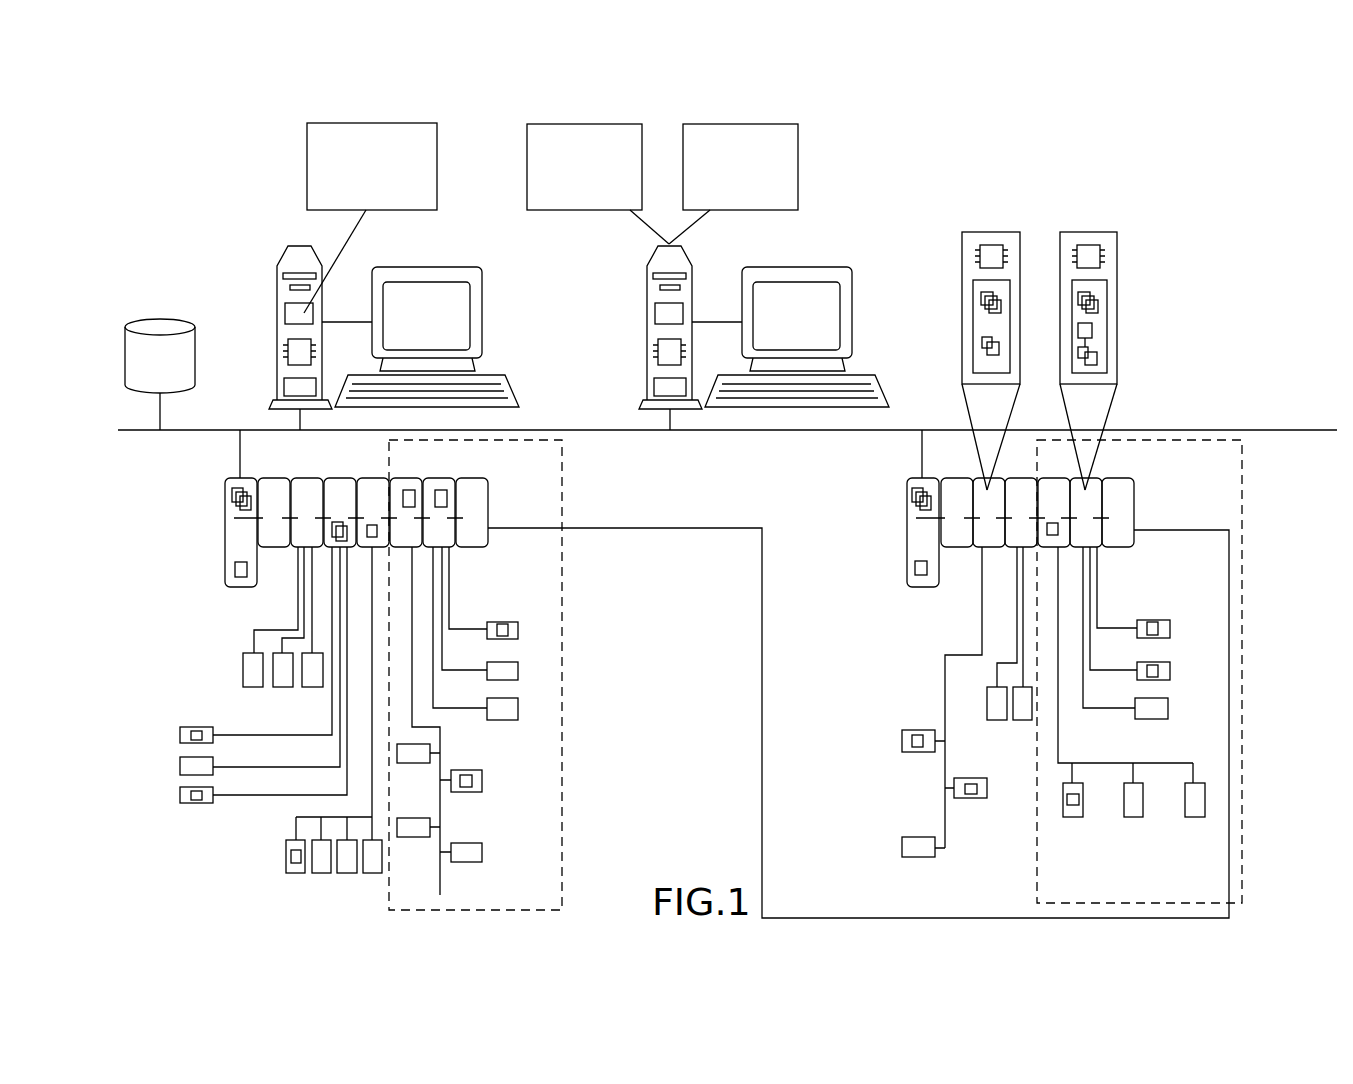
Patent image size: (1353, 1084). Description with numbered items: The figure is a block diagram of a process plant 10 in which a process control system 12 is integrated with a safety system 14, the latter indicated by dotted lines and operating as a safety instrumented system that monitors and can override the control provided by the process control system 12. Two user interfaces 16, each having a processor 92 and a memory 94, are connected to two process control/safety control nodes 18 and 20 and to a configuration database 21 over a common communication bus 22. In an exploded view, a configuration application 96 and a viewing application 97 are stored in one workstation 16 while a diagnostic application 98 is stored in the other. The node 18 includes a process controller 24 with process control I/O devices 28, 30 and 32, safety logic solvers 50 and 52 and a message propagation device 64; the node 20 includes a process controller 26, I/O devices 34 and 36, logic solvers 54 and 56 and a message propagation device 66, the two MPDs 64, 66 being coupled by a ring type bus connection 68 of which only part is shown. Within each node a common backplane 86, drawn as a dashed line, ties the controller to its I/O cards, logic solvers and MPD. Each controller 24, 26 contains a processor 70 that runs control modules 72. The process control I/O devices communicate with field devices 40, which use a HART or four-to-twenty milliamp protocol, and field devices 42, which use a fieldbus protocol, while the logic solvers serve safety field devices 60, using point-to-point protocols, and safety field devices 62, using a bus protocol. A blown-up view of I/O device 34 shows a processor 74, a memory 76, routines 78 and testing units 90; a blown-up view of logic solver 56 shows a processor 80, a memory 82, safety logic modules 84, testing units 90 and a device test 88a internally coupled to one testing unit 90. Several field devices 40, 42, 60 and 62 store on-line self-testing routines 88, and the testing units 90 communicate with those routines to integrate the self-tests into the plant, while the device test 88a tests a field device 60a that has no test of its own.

The process plant 10 is at (190, 220).
The process control system 12 is at (150, 672).
The safety system 14 is at (563, 815).
The user interface 16 is at (299, 245).
The process control/safety control node 18 is at (184, 492).
The process control/safety control node 20 is at (1258, 492).
The configuration database 21 is at (178, 320).
The bus 22 is at (578, 430).
The process controller 24 is at (240, 590).
The process controller 26 is at (921, 590).
The process control system I/O device 28 is at (308, 478).
The process control system I/O device 30 is at (340, 478).
The process control system I/O device 32 is at (372, 478).
The process control system I/O device 34 is at (1000, 232).
The process control system I/O device 36 is at (1020, 478).
The field device 40 is at (254, 687).
The field device 42 is at (295, 873).
The safety system logic solver 50 is at (405, 478).
The safety system logic solver 52 is at (437, 478).
The safety system logic solver 54 is at (1055, 478).
The safety system logic solver 56 is at (1097, 232).
The safety system field device 60 is at (520, 630).
The safety field device 60a is at (1170, 710).
The safety system field device 62 is at (410, 763).
The message propagation device 64 is at (470, 547).
The message propagation device 66 is at (1128, 478).
The ring type bus connection 68 is at (760, 705).
The processor 70 is at (235, 572).
The control module 72 is at (232, 497).
The processor 74 is at (980, 252).
The memory 76 is at (973, 323).
The routine 78 is at (981, 298).
The processor 80 is at (1100, 253).
The memory 82 is at (1107, 325).
The safety logic module 84 is at (1092, 310).
The common backplane 86 is at (248, 520).
The device self-testing routine 88 is at (197, 727).
The device test 88a is at (1078, 333).
The testing unit 90 is at (982, 343).
The processor 92 is at (288, 348).
The memory 94 is at (285, 310).
The configuration application 96 is at (527, 143).
The viewing application 97 is at (798, 144).
The diagnostic application 98 is at (307, 143).